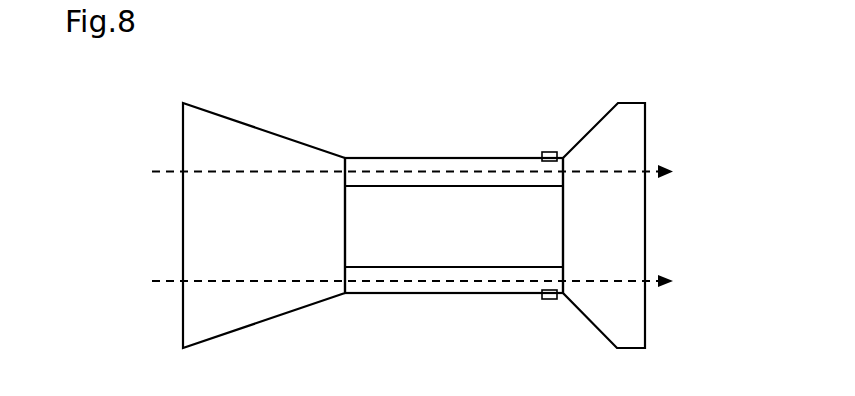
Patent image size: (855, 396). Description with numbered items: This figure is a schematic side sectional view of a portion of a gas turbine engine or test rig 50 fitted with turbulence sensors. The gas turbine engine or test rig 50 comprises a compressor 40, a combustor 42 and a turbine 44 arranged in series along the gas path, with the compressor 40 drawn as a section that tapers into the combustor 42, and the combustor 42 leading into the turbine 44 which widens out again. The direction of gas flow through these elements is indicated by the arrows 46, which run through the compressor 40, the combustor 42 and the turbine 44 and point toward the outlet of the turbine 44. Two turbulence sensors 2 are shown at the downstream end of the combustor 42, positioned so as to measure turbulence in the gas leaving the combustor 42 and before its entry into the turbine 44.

The gas turbine engine or test rig 50 is at (710, 50).
The compressor 40 is at (253, 147).
The combustor 42 is at (447, 165).
The turbine 44 is at (635, 133).
The arrows 46 is at (283, 172).
The turbulence sensor 2 is at (548, 152).